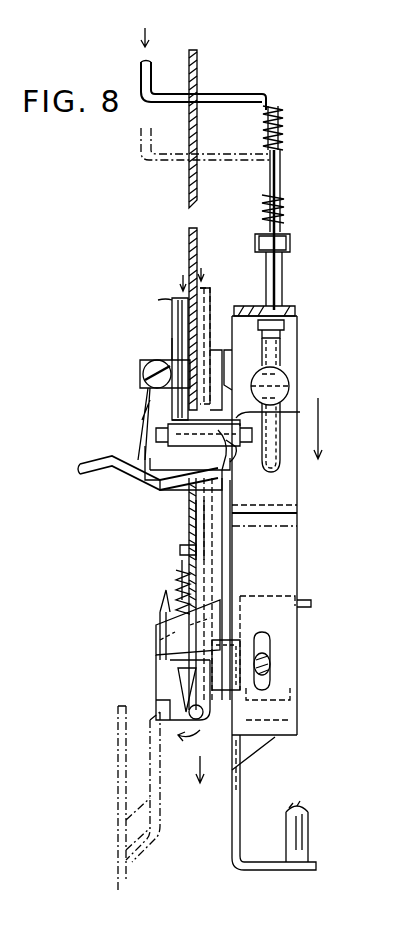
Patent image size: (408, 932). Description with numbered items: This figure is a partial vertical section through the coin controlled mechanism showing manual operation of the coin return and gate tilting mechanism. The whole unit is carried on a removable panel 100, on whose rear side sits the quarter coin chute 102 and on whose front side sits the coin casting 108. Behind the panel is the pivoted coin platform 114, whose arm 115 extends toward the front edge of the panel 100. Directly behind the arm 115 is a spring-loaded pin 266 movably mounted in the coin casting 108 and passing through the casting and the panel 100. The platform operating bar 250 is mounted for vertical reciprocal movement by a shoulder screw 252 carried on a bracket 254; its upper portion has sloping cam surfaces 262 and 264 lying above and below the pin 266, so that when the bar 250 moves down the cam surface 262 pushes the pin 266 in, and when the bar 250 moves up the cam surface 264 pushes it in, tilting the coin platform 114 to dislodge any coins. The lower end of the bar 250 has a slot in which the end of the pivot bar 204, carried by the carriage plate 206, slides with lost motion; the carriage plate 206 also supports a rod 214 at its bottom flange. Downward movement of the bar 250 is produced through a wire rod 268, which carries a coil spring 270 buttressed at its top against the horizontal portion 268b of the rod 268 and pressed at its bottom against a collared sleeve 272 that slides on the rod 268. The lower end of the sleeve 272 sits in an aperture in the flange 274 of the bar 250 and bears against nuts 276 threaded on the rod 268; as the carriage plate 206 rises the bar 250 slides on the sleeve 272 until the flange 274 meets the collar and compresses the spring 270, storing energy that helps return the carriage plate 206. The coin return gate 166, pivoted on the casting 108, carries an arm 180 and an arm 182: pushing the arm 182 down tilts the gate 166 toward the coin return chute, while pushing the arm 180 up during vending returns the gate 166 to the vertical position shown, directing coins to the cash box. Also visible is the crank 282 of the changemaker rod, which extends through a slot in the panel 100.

The removable panel 100 is at (187, 250).
The quarter coin chute 102 is at (172, 300).
The coin casting 108 is at (204, 290).
The pivoted coin platform 114 is at (142, 384).
The arm 115 is at (166, 446).
The coin return gate 166 is at (160, 612).
The arm 180 is at (156, 632).
The arm 182 is at (218, 688).
The pivot bar 204 is at (275, 652).
The carriage plate 206 is at (246, 804).
The rod 214 is at (310, 826).
The platform operating bar 250 is at (290, 556).
The shoulder screw 252 is at (291, 386).
The bracket 254 is at (292, 372).
The sloping cam surface 262 is at (318, 420).
The sloping cam surface 264 is at (232, 460).
The pin 266 is at (168, 434).
The wire rod 268 is at (149, 70).
The horizontal portion 268b is at (228, 94).
The coil spring 270 is at (284, 112).
The collared sleeve 272 is at (281, 268).
The flange 274 is at (289, 308).
The nuts 276 is at (287, 330).
The crank 282 is at (110, 470).